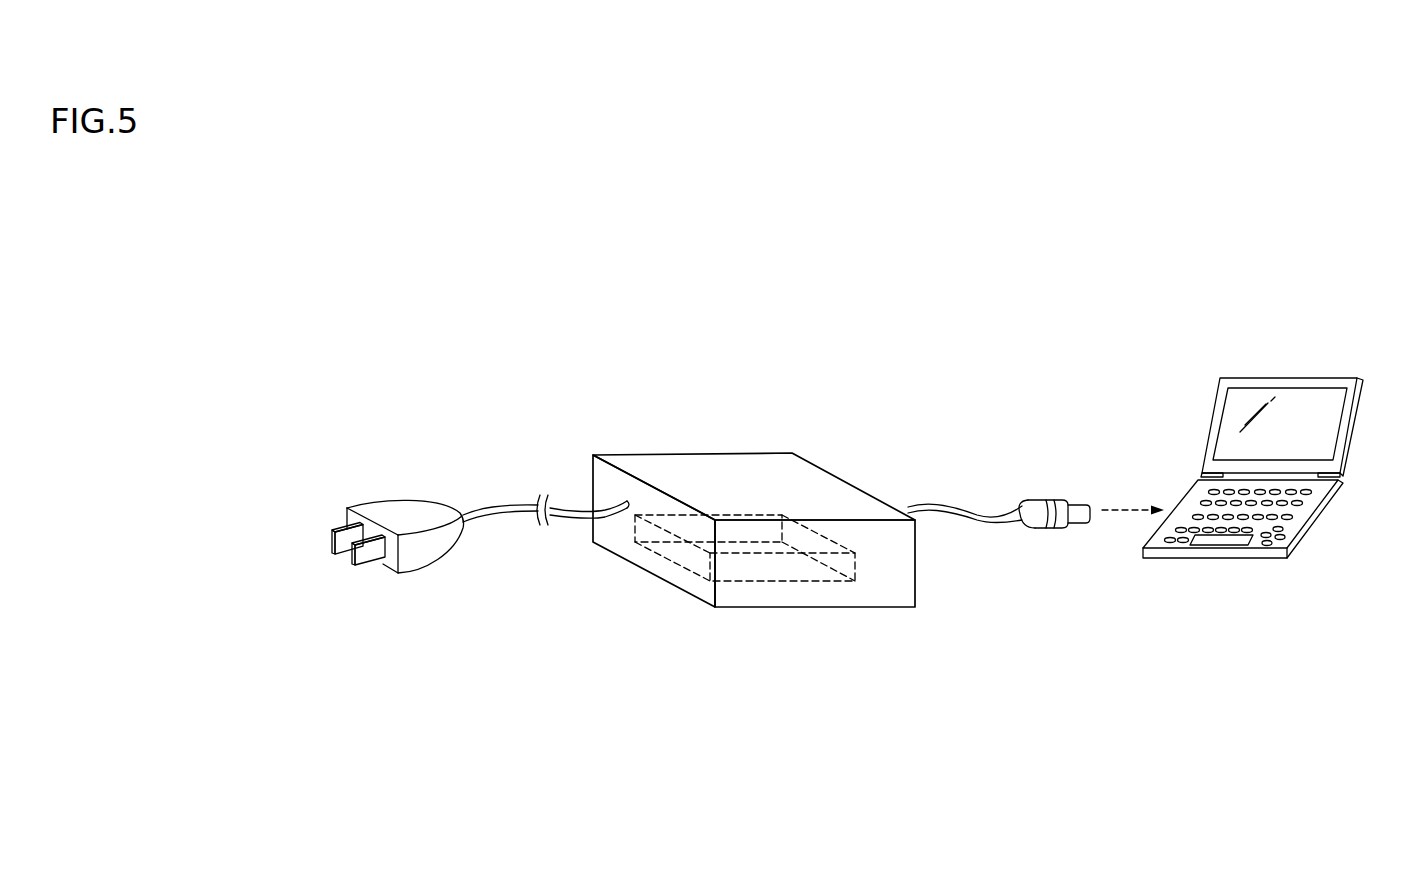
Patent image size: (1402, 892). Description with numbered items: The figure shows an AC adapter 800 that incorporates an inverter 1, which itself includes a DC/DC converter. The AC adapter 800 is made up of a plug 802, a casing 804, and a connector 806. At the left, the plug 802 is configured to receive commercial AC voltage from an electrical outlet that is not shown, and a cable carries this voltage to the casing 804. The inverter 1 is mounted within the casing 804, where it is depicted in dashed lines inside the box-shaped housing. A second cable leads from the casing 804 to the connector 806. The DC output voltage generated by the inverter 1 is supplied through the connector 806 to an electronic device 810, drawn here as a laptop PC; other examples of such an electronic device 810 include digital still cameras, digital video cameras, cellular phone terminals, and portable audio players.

The inverter 1 is at (773, 568).
The AC adapter 800 is at (862, 777).
The plug 802 is at (405, 515).
The casing 804 is at (685, 455).
The connector 806 is at (1040, 498).
The electronic device 810 is at (1302, 377).